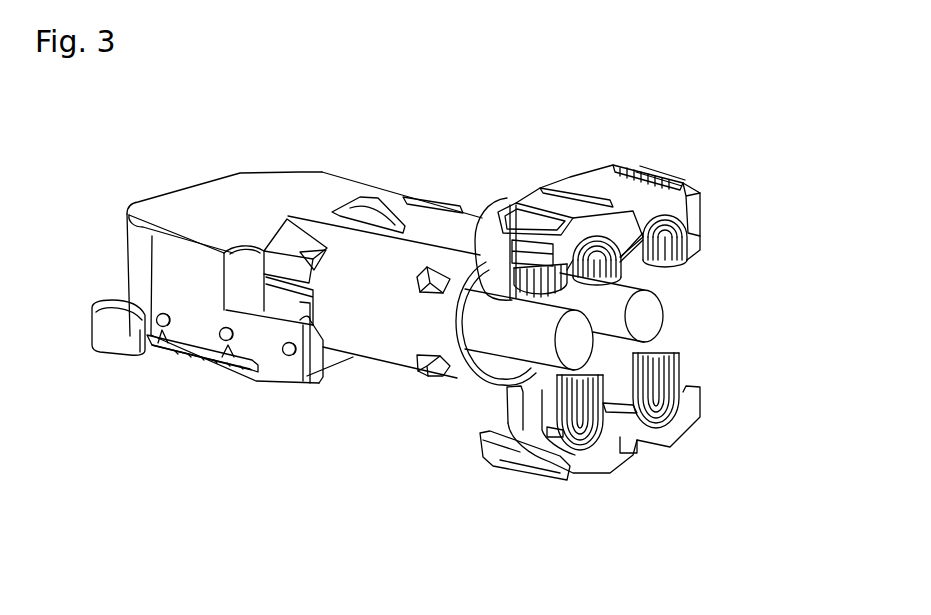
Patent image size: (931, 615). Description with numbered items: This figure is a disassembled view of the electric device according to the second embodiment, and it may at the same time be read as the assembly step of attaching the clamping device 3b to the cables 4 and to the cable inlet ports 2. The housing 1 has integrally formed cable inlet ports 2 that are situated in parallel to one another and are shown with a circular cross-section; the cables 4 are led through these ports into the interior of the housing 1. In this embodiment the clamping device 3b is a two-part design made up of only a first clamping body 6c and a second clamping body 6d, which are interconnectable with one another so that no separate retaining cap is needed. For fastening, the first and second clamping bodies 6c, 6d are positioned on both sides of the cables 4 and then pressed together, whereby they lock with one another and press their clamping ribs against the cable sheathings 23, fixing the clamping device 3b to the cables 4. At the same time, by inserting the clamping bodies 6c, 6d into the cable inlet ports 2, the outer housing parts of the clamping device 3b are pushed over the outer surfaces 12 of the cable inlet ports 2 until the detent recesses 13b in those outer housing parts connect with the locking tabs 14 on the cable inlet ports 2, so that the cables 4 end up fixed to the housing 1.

The housing 1 is at (219, 193).
The cable inlet ports 2 is at (355, 248).
The outer surfaces 12 is at (385, 308).
The locking tabs 14 is at (426, 270).
The detent recesses 13b is at (520, 222).
The first clamping body 6c is at (630, 170).
The second clamping body 6d is at (653, 441).
The cables 4 is at (651, 315).
The cable sheathings 23 is at (503, 333).
The clamping device 3b is at (640, 507).